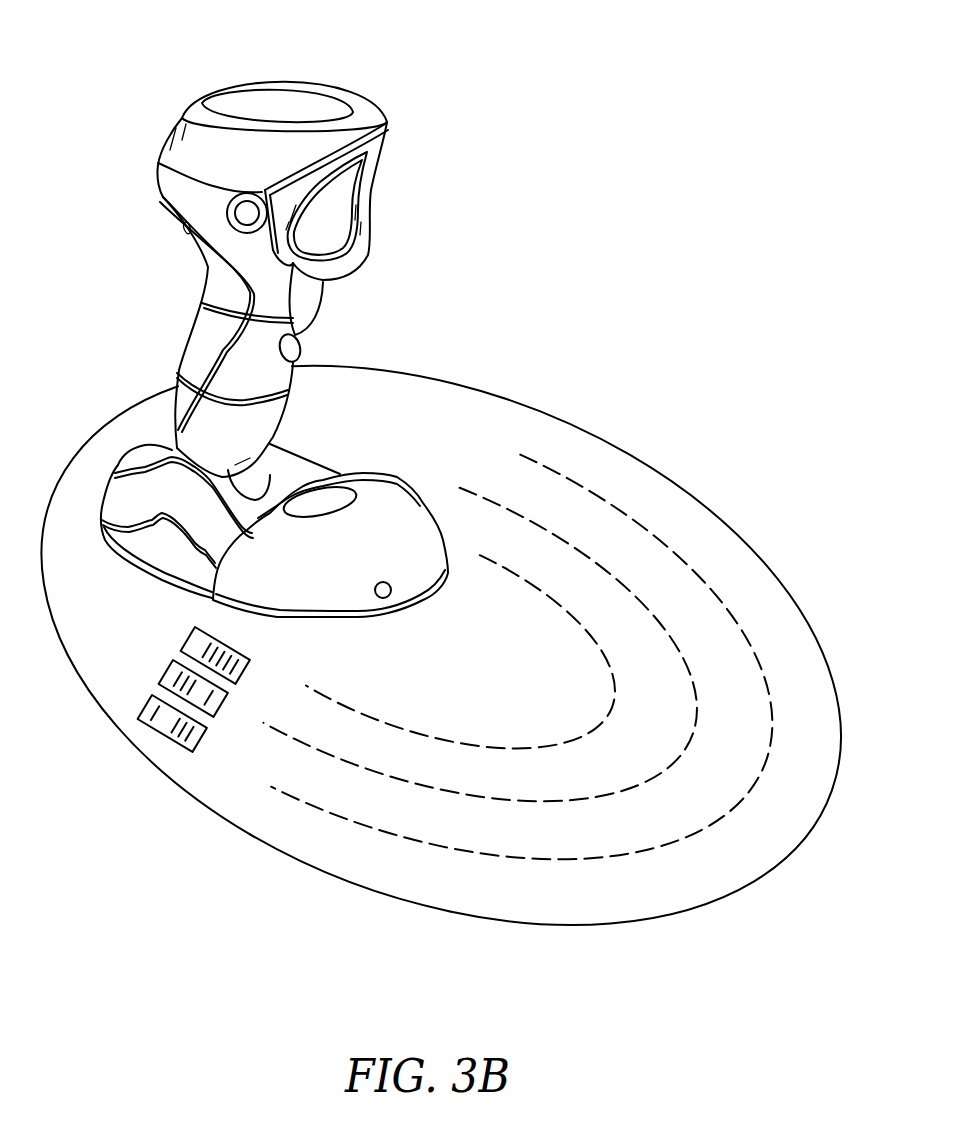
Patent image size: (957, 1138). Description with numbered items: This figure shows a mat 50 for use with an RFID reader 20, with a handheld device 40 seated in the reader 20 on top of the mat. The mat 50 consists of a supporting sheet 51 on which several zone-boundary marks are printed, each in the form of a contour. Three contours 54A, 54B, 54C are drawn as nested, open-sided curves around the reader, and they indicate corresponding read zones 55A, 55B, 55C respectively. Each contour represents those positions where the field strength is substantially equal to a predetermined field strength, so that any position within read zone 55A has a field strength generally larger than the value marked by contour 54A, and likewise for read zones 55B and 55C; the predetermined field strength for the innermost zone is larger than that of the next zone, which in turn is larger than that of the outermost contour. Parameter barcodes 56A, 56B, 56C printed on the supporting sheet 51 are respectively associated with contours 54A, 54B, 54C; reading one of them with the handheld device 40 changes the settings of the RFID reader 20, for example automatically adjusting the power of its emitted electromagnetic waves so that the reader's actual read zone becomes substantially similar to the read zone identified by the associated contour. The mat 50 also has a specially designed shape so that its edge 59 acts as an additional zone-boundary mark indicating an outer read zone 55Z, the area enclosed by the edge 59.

The RFID reader 20 is at (405, 490).
The handheld device 40 is at (231, 91).
The mat 50 is at (753, 459).
The supporting sheet 51 is at (780, 853).
The contour 54A is at (577, 622).
The contour 54B is at (650, 613).
The contour 54C is at (720, 598).
The read zone 55A is at (460, 651).
The read zone 55B is at (480, 644).
The read zone 55C is at (521, 657).
The read zone 55Z is at (440, 645).
The parameter barcode 56A is at (187, 640).
The parameter barcode 56B is at (223, 707).
The parameter barcode 56C is at (198, 747).
The edge 59 is at (330, 872).